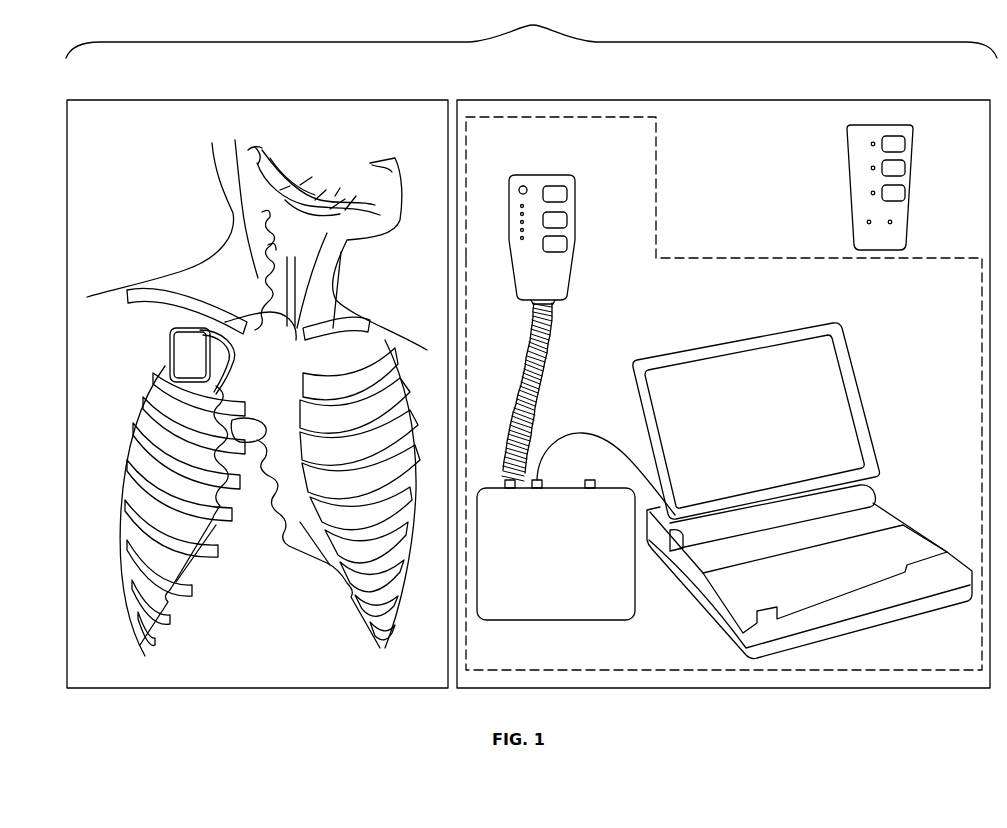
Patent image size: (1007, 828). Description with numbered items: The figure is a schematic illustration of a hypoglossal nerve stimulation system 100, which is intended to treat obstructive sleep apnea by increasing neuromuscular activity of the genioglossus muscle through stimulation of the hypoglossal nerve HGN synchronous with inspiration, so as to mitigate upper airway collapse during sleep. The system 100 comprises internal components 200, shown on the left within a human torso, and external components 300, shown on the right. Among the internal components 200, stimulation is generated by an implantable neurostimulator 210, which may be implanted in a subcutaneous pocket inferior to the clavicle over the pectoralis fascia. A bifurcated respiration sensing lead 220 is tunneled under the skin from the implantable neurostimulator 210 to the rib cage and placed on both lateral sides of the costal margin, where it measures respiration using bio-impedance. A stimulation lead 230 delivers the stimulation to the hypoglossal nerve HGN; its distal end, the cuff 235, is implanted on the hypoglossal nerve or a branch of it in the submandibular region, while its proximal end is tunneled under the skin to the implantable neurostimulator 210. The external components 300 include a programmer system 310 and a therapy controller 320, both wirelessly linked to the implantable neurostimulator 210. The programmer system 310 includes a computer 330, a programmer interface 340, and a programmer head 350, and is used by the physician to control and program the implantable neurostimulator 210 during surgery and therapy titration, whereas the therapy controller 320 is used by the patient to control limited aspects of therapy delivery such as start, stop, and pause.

The hypoglossal nerve stimulation system 100 is at (531, 30).
The internal components 200 is at (247, 101).
The external components 300 is at (730, 101).
The implantable neurostimulator 210 is at (168, 340).
The respiration sensing lead 220 is at (233, 362).
The stimulation lead 230 is at (278, 251).
The cuff 235 is at (327, 218).
The hypoglossal nerve HGN is at (290, 194).
The programmer system 310 is at (657, 184).
The therapy controller 320 is at (842, 151).
The computer 330 is at (743, 333).
The programmer interface 340 is at (563, 620).
The programmer head 350 is at (553, 170).